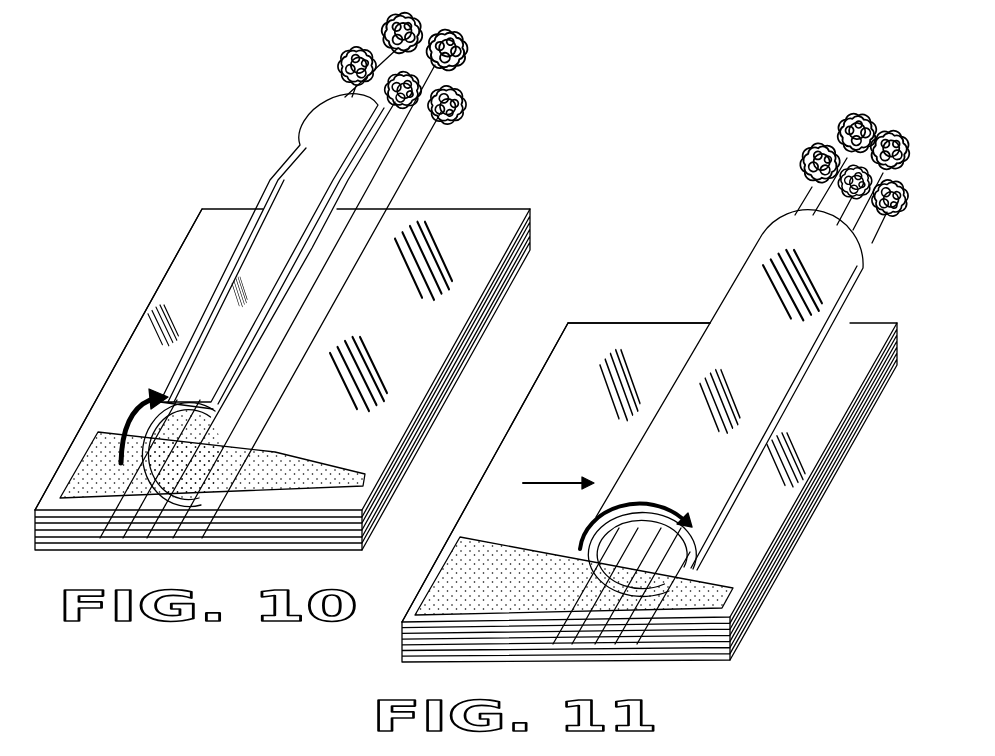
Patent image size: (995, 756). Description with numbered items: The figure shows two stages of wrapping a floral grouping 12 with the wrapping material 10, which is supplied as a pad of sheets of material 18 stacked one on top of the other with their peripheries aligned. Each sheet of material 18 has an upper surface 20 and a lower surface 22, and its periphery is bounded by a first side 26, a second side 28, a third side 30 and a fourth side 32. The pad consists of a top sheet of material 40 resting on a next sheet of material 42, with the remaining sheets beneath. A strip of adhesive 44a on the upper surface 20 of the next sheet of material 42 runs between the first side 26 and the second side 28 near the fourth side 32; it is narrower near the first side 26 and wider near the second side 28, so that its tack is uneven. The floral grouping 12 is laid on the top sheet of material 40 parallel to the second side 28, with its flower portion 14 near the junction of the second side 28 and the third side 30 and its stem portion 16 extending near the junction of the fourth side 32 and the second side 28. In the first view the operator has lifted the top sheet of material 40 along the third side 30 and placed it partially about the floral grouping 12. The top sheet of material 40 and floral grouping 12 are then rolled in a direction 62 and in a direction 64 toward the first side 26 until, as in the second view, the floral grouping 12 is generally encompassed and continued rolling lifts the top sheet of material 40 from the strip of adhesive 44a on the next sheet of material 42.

In FIG. 10, the wrapping material 10 is at (328, 295).
In FIG. 11, the wrapping material 10 is at (731, 377).
In FIG. 10, the floral grouping 12 is at (476, 51).
In FIG. 11, the floral grouping 12 is at (846, 109).
In FIG. 10, the flower portion 14 is at (380, 24).
In FIG. 11, the flower portion 14 is at (893, 128).
In FIG. 10, the stem portion 16 is at (213, 523).
In FIG. 11, the stem portion 16 is at (623, 638).
In FIG. 11, the sheet of material 18 is at (767, 208).
In FIG. 10, the upper surface 20 is at (395, 232).
In FIG. 11, the upper surface 20 is at (702, 418).
In FIG. 10, the lower surface 22 is at (323, 143).
In FIG. 10, the first side 26 is at (532, 240).
In FIG. 11, the first side 26 is at (818, 457).
In FIG. 10, the second side 28 is at (238, 356).
In FIG. 11, the second side 28 is at (548, 364).
In FIG. 10, the third side 30 is at (510, 207).
In FIG. 11, the third side 30 is at (625, 323).
In FIG. 10, the fourth side 32 is at (302, 512).
In FIG. 11, the fourth side 32 is at (477, 630).
In FIG. 10, the top sheet of material 40 is at (330, 97).
In FIG. 11, the top sheet of material 40 is at (790, 213).
In FIG. 10, the next sheet of material 42 is at (182, 246).
In FIG. 11, the next sheet of material 42 is at (590, 322).
In FIG. 10, the strip of adhesive 44a is at (105, 452).
In FIG. 11, the strip of adhesive 44a is at (487, 567).
In FIG. 11, the rolling direction 62 is at (633, 500).
In FIG. 11, the direction toward first side 64 is at (538, 478).